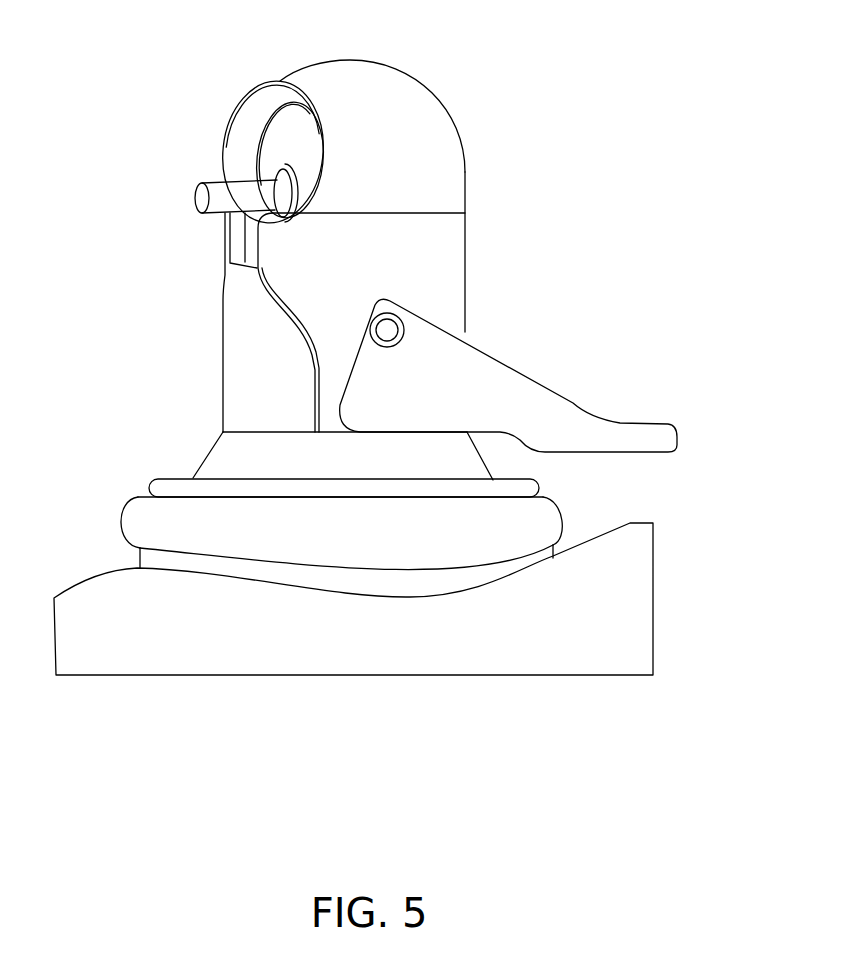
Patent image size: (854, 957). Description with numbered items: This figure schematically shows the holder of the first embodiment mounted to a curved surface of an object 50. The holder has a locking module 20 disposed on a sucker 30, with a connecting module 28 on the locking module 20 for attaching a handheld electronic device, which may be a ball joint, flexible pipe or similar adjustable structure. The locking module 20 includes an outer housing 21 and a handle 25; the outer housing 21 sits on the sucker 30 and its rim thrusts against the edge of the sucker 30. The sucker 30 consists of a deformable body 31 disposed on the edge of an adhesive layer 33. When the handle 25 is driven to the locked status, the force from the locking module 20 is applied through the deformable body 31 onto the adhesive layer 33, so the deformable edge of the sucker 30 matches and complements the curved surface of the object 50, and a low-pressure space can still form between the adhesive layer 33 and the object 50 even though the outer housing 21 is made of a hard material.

The locking module 20 is at (482, 100).
The outer housing 21 is at (310, 62).
The handle 25 is at (673, 423).
The connecting module 28 is at (200, 185).
The sucker 30 is at (439, 513).
The deformable body 31 is at (552, 518).
The adhesive layer 33 is at (547, 558).
The object 50 is at (638, 575).